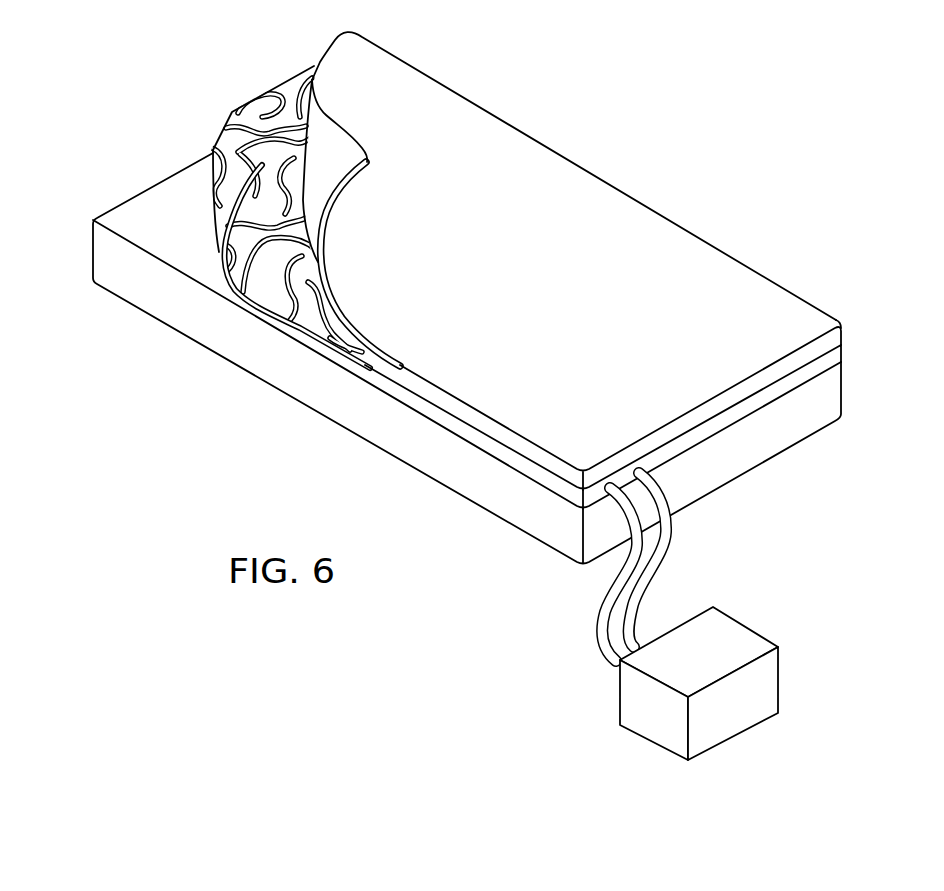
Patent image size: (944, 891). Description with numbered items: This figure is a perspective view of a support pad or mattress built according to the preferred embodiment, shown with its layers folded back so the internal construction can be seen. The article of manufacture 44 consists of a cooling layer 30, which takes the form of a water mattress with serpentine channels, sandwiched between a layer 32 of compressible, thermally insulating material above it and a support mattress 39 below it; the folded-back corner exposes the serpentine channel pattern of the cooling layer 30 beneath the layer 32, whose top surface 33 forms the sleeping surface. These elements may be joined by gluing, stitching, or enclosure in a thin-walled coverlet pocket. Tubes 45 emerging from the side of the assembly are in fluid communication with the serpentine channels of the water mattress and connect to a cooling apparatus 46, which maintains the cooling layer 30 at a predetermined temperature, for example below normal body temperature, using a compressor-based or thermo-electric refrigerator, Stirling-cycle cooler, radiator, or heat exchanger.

The cooling layer 30 is at (216, 162).
The layer of compressible, thermally insulating material 32 is at (369, 162).
The top surface of cover 33 is at (645, 217).
The support mattress 39 is at (133, 197).
The article of manufacture 44 is at (448, 297).
The tubes 45 is at (656, 558).
The cooling apparatus 46 is at (778, 678).